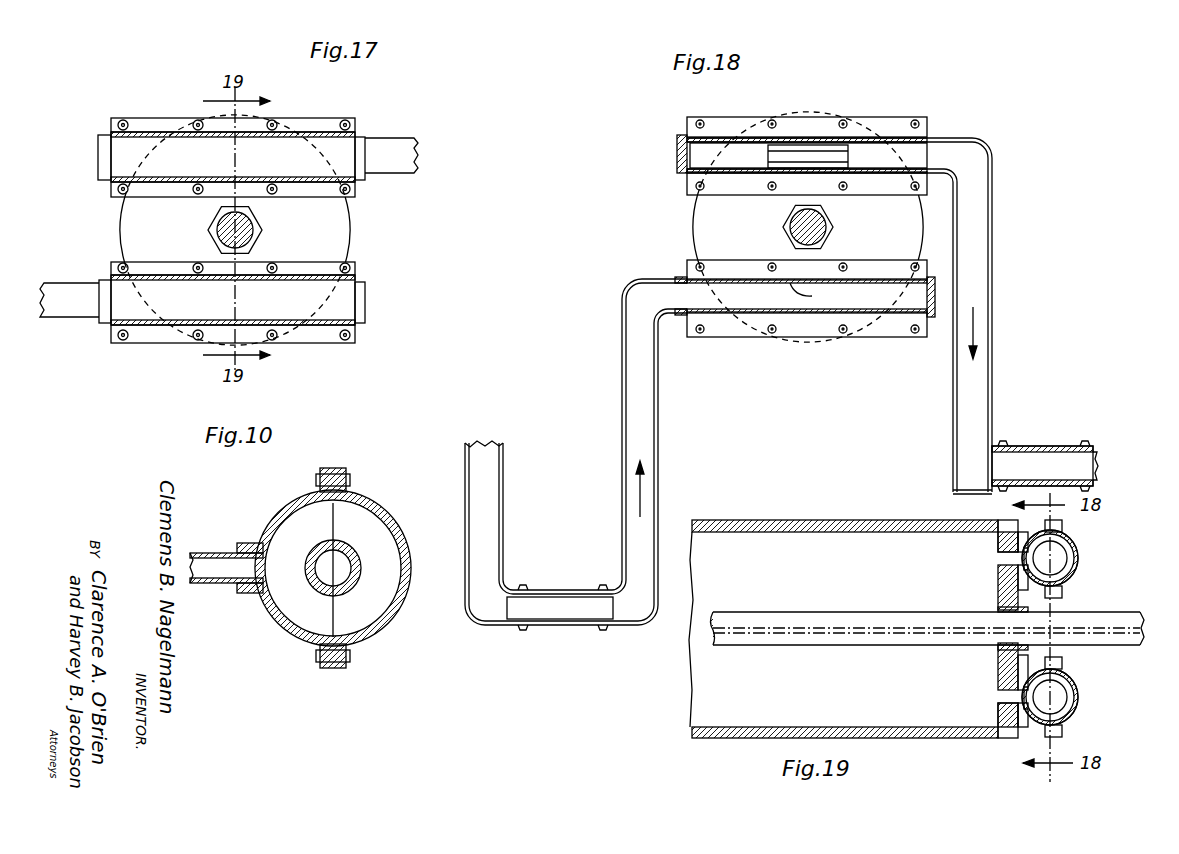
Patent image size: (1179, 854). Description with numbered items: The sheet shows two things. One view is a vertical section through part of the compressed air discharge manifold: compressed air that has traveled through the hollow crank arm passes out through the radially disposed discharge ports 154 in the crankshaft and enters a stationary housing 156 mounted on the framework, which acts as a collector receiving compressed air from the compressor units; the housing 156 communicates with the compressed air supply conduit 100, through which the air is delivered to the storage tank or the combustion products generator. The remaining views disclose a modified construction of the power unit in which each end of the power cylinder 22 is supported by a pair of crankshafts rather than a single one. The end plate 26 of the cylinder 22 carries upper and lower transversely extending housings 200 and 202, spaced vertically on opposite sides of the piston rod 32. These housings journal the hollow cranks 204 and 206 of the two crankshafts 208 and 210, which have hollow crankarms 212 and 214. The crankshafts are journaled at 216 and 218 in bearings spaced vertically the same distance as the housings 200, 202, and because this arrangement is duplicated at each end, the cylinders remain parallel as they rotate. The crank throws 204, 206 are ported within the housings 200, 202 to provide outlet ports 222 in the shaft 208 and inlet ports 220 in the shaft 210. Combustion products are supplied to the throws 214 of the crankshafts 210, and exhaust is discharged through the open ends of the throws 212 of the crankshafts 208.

In FIG. 19, the power cylinder 22 is at (790, 520).
In FIG. 17, the end plate 26 is at (335, 230).
In FIG. 18, the end plate 26 is at (700, 210).
In FIG. 19, the end plate 26 is at (998, 668).
In FIG. 17, the piston rod 32 is at (252, 227).
In FIG. 18, the piston rod 32 is at (823, 225).
In FIG. 19, the piston rod 32 is at (870, 630).
In FIG. 10, the compressed air supply conduit 100 is at (223, 583).
In FIG. 10, the discharge ports 154 is at (323, 550).
In FIG. 10, the stationary housing 156 is at (380, 510).
In FIG. 17, the upper housing 200 is at (327, 140).
In FIG. 18, the upper housing 200 is at (913, 137).
In FIG. 19, the upper housing 200 is at (998, 540).
In FIG. 17, the lower housing 202 is at (328, 315).
In FIG. 18, the lower housing 202 is at (892, 323).
In FIG. 19, the lower housing 202 is at (1035, 727).
In FIG. 17, the hollow crank 204 is at (377, 153).
In FIG. 18, the hollow crank 204 is at (942, 140).
In FIG. 19, the hollow crank 204 is at (1078, 557).
In FIG. 17, the hollow crank 206 is at (90, 303).
In FIG. 18, the hollow crank 206 is at (793, 312).
In FIG. 19, the hollow crank 206 is at (1078, 693).
In FIG. 17, the crankshaft 208 is at (420, 152).
In FIG. 18, the crankshaft 208 is at (1093, 463).
In FIG. 17, the crankshaft 210 is at (52, 283).
In FIG. 18, the crankshaft 210 is at (617, 493).
In FIG. 18, the hollow crankarm 212 is at (993, 271).
In FIG. 18, the hollow crankarm 214 is at (662, 447).
In FIG. 18, the bearing journal 216 is at (1055, 448).
In FIG. 18, the bearing journal 218 is at (577, 628).
In FIG. 18, the slot 220 is at (800, 283).
In FIG. 18, the outlet ports 222 is at (770, 168).